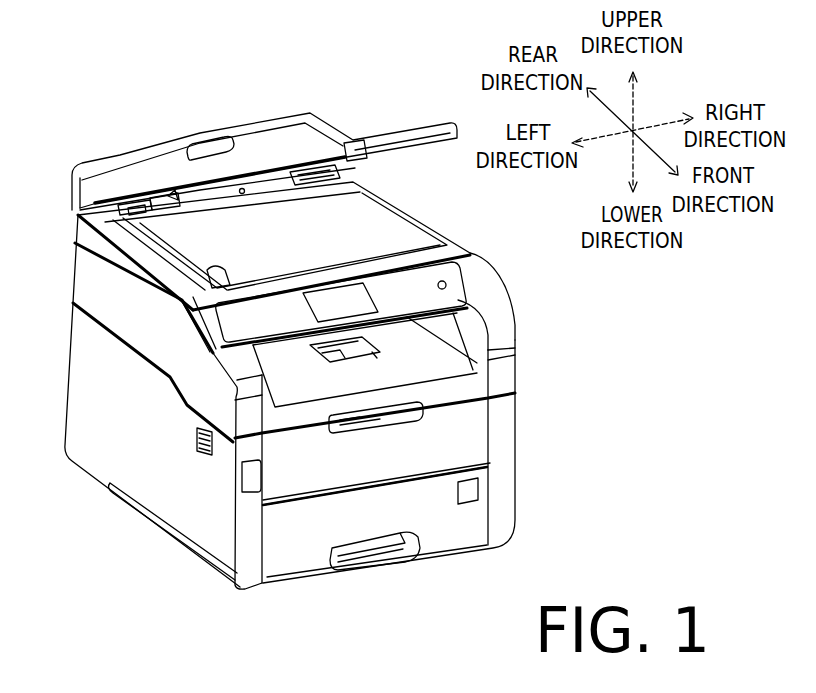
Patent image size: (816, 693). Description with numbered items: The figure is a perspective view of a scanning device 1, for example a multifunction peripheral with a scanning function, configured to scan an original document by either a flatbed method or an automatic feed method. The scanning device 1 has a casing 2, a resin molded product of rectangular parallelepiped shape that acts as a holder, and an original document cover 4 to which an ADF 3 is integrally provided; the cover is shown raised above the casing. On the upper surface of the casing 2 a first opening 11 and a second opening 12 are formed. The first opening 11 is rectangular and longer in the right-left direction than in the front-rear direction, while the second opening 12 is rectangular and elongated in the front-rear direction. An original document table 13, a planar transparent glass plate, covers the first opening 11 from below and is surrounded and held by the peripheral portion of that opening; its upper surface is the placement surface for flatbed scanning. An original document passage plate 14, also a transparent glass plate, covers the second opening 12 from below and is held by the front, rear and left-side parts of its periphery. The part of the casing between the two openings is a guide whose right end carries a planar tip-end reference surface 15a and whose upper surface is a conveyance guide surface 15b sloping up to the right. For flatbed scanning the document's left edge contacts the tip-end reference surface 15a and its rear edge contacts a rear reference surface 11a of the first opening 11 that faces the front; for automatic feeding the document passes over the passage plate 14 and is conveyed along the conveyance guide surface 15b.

The scanning device 1 is at (521, 343).
The casing 2 is at (75, 243).
The ADF 3 is at (220, 128).
The original document cover 4 is at (358, 136).
The first opening 11 is at (365, 195).
The rear reference surface 11a is at (183, 203).
The second opening 12 is at (143, 250).
The original document table 13 is at (390, 228).
The original document passage plate 14 is at (127, 216).
The tip-end reference surface 15a is at (165, 268).
The conveyance guide surface 15b is at (137, 220).